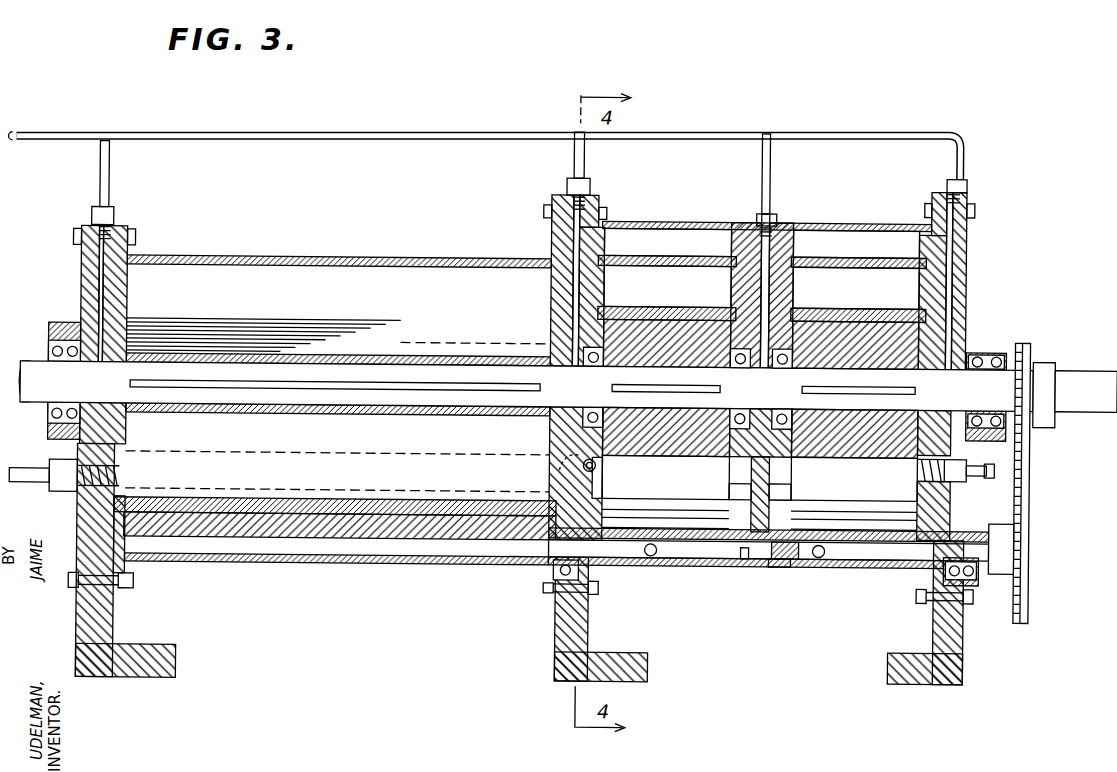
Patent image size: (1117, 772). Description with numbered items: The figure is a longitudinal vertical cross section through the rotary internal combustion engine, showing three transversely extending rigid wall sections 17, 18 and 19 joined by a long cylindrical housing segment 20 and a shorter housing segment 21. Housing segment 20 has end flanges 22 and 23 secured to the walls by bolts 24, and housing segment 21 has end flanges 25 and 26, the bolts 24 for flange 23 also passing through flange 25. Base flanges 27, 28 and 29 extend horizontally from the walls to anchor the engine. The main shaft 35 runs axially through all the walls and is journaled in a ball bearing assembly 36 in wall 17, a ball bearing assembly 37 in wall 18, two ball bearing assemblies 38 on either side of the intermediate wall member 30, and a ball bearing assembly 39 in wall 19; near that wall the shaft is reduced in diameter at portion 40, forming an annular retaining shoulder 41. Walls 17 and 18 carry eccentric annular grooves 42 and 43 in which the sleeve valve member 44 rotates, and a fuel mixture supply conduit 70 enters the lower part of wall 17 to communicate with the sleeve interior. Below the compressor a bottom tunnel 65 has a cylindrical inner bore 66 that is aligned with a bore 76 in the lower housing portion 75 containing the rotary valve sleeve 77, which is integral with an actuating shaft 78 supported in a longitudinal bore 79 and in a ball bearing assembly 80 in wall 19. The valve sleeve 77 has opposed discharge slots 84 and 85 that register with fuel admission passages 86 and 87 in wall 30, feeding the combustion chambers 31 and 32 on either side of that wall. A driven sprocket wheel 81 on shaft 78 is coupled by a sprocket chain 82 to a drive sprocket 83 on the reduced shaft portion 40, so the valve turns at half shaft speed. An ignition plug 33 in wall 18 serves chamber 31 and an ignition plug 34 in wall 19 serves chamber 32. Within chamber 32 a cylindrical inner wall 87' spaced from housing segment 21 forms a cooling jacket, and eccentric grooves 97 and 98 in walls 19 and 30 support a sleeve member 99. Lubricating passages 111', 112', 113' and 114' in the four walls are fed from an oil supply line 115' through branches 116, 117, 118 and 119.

The oil supply line 115' is at (484, 128).
The branch 116 is at (108, 186).
The branch 117 is at (582, 176).
The branch 118 is at (770, 177).
The branch 119 is at (956, 166).
The lubricating passage 111' is at (66, 291).
The end flange 22 is at (125, 231).
The housing segment 20 is at (360, 262).
The end flange 23 is at (550, 196).
The end flange 25 is at (592, 198).
The housing segment 21 is at (683, 222).
The lubricating passage 112' is at (656, 264).
The lubricating passage 113' is at (682, 286).
The ball bearing assembly 37 is at (610, 334).
The intermediate wall member 30 is at (778, 230).
The cylindrical inner wall 87' is at (859, 223).
The annular groove 98 is at (798, 308).
The sleeve member 99 is at (850, 315).
The annular groove 97 is at (930, 306).
The end flange 26 is at (932, 191).
The lubricating passage 114' is at (982, 330).
The ball bearing assembly 39 is at (988, 335).
The ball bearing assembly 36 is at (70, 335).
The main shaft 35 is at (45, 365).
The annular groove 42 is at (128, 336).
The annular groove 43 is at (550, 318).
The annular retaining shoulder 41 is at (920, 397).
The drive sprocket 83 is at (1038, 412).
The reduced shaft portion 40 is at (1075, 380).
The sprocket chain 82 is at (1028, 485).
The sleeve valve member 44 is at (357, 503).
The bottom tunnel 65 is at (345, 562).
The cylindrical inner bore 66 is at (255, 548).
The fuel mixture supply conduit 70 is at (38, 483).
The wall section 17 is at (125, 614).
The base flange 27 is at (160, 651).
The bolt 24 is at (90, 590).
The wall section 18 is at (590, 620).
The base flange 28 is at (640, 654).
The ignition plug 33 is at (600, 462).
The combustion chamber 31 is at (677, 486).
The fuel admission passage 86 is at (740, 486).
The ball bearing assembly 38 is at (742, 428).
The fuel admission passage 87 is at (796, 486).
The combustion chamber 32 is at (862, 486).
The ignition plug 34 is at (965, 466).
The lower shaft 75 is at (722, 558).
The cylindrical bore 76 is at (652, 559).
The discharge slot 84 is at (745, 558).
The rotary valve sleeve 77 is at (770, 558).
The discharge slot 85 is at (775, 558).
The longitudinal bore 79 is at (818, 558).
The actuating shaft 78 is at (845, 560).
The wall section 19 is at (955, 626).
The base flange 29 is at (893, 647).
The ball bearing assembly 80 is at (978, 576).
The driven sprocket wheel 81 is at (1005, 560).